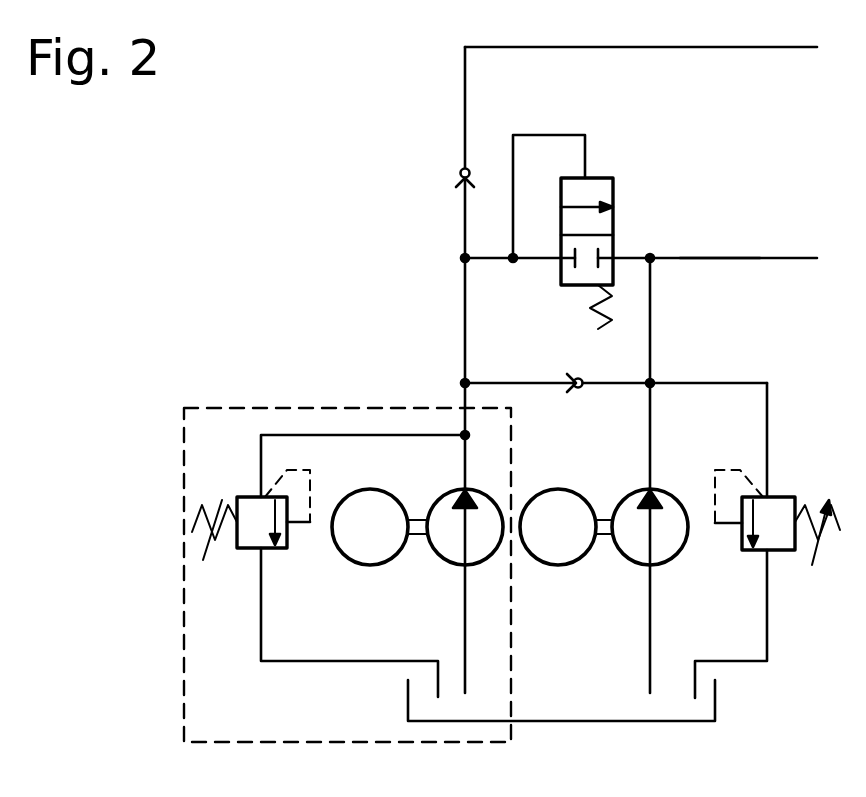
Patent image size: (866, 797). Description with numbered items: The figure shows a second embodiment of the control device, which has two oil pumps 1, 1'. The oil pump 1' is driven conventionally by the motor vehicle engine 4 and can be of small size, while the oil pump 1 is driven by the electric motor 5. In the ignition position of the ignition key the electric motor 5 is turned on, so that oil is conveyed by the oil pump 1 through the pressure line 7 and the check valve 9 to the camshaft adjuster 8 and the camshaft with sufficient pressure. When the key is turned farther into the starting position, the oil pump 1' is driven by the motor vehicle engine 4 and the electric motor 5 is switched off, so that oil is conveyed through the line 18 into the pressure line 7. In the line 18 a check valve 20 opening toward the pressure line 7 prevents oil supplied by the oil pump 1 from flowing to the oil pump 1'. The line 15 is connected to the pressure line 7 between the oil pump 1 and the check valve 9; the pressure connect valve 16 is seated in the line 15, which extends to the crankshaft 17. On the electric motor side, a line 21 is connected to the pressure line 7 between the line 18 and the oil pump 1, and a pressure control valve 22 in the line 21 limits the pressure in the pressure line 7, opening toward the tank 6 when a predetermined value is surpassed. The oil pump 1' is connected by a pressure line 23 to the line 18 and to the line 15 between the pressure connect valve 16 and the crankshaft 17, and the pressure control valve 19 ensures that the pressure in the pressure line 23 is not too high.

The oil pump 1 is at (454, 591).
The oil pump 1' is at (675, 591).
The motor vehicle engine 4 is at (557, 507).
The electric motor 5 is at (370, 548).
The tank 6 is at (597, 705).
The pressure line 7 is at (462, 313).
The camshaft adjuster 8 is at (656, 46).
The check valve 9 is at (456, 178).
The line 15 is at (702, 258).
The pressure connect valve 16 is at (597, 188).
The crankshaft 17 is at (665, 252).
The line 18 is at (523, 381).
The pressure control valve 19 is at (783, 512).
The check valve 20 is at (583, 380).
The line 21 is at (334, 435).
The pressure control valve 22 is at (240, 508).
The pressure line 23 is at (654, 452).